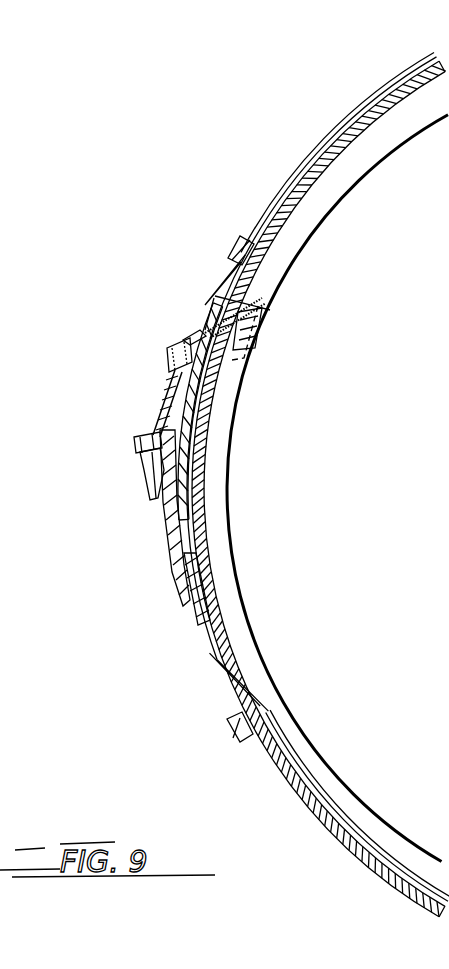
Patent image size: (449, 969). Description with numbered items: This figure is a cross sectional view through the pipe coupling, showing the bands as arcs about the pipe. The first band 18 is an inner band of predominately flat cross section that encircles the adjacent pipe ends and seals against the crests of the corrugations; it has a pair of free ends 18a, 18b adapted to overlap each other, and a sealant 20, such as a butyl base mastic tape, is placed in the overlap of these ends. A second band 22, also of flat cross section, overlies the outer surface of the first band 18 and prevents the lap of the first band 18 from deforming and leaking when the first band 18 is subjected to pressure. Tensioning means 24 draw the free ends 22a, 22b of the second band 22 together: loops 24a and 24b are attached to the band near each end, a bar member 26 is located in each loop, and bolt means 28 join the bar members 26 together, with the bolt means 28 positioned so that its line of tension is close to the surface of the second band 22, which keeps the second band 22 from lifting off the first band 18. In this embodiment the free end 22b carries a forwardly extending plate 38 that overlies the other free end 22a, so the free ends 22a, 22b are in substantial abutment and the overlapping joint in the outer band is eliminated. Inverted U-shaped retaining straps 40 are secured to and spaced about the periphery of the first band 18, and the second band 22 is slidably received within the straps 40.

The first band 18 is at (363, 141).
The free end of first band 18a is at (250, 305).
The free end of first band 18b is at (250, 338).
The sealant 20 is at (268, 308).
The second band 22 is at (320, 150).
The free end of second band 22a is at (178, 505).
The free end of second band 22b is at (190, 622).
The tensioning means 24 is at (130, 395).
The loop 24a is at (200, 316).
The loop 24b is at (147, 466).
The bar member 26 is at (134, 440).
The bolt means 28 is at (158, 380).
The forwardly extending plate 38 is at (165, 545).
The retaining strap 40 is at (232, 246).